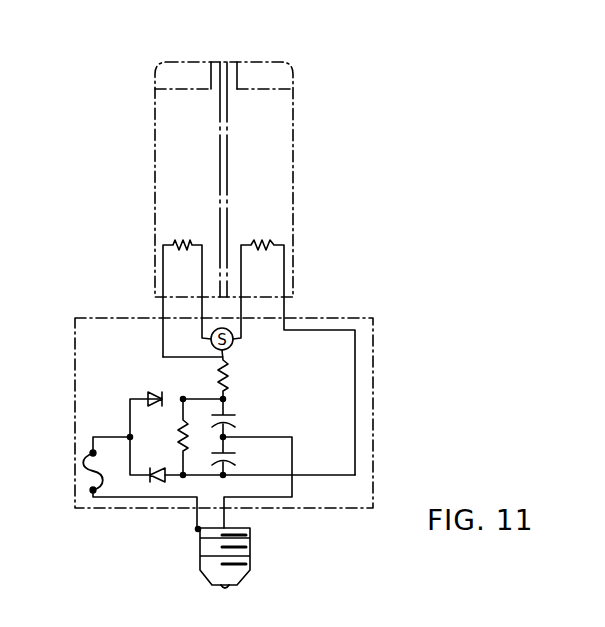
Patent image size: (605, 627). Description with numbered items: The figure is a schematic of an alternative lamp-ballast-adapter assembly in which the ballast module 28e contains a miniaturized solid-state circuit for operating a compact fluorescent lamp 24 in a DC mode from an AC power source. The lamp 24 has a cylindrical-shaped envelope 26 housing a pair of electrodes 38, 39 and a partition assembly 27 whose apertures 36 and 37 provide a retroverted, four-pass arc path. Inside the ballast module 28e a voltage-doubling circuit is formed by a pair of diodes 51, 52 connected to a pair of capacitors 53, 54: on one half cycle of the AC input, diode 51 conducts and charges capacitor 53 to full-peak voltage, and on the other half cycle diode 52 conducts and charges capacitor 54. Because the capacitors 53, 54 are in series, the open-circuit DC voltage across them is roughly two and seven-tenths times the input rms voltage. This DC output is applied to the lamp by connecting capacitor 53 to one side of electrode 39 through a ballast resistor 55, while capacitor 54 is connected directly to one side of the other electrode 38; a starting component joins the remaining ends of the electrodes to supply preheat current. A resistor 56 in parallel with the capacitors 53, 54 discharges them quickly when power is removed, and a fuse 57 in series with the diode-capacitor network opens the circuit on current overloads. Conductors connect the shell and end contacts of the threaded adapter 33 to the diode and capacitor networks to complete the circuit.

The fluorescent lamp 24 is at (294, 170).
The envelope 26 is at (155, 152).
The partition assembly 27 is at (258, 122).
The ballast module 28e is at (441, 331).
The threaded adapter 33 is at (247, 562).
The aperture 36 is at (252, 75).
The aperture 37 is at (190, 80).
The electrode 38 is at (258, 243).
The electrode 39 is at (178, 243).
The diode 51 is at (148, 391).
The diode 52 is at (160, 483).
The capacitor 53 is at (232, 410).
The capacitor 54 is at (237, 451).
The ballast resistor 55 is at (227, 370).
The resistor 56 is at (178, 444).
The fuse 57 is at (88, 463).